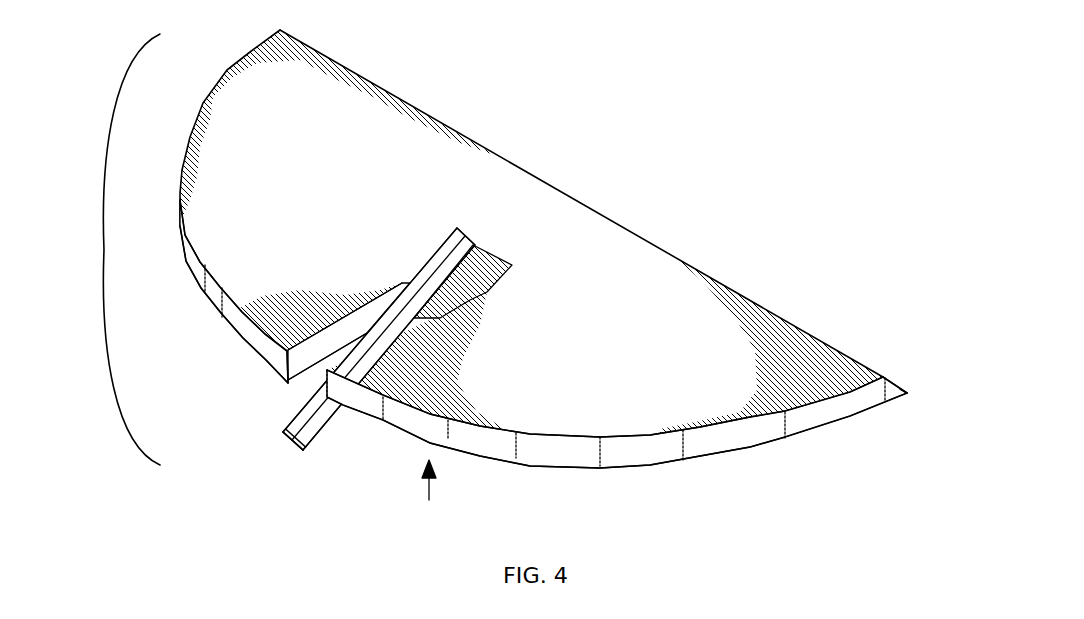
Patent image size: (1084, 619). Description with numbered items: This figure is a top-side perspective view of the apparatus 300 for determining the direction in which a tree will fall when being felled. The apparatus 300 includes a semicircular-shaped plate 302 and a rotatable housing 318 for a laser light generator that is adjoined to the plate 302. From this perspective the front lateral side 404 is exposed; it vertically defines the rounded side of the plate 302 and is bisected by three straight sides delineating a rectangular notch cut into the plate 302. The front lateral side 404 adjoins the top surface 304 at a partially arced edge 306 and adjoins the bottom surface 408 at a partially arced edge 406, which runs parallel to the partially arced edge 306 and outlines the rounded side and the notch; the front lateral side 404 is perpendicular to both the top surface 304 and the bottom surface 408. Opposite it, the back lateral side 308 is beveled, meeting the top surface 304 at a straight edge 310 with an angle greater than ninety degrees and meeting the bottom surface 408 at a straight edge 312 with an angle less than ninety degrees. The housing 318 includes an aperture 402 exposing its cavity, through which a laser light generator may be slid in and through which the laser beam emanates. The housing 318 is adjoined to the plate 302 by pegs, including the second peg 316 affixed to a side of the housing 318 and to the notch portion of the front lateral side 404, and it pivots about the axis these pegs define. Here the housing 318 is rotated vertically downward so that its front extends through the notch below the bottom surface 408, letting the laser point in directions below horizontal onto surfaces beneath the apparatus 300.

The apparatus 300 is at (504, 281).
The semicircular-shaped plate 302 is at (504, 281).
The top surface 304 is at (210, 235).
The partially arced edge 306 is at (550, 362).
The back lateral side 308 is at (894, 362).
The straight edge 310 is at (666, 254).
The straight edge 312 is at (907, 393).
The second peg 316 is at (361, 357).
The rotatable housing 318 is at (312, 449).
The aperture 402 is at (287, 437).
The front lateral side 404 is at (295, 362).
The partially arced edge 406 is at (222, 328).
The bottom surface 408 is at (431, 496).